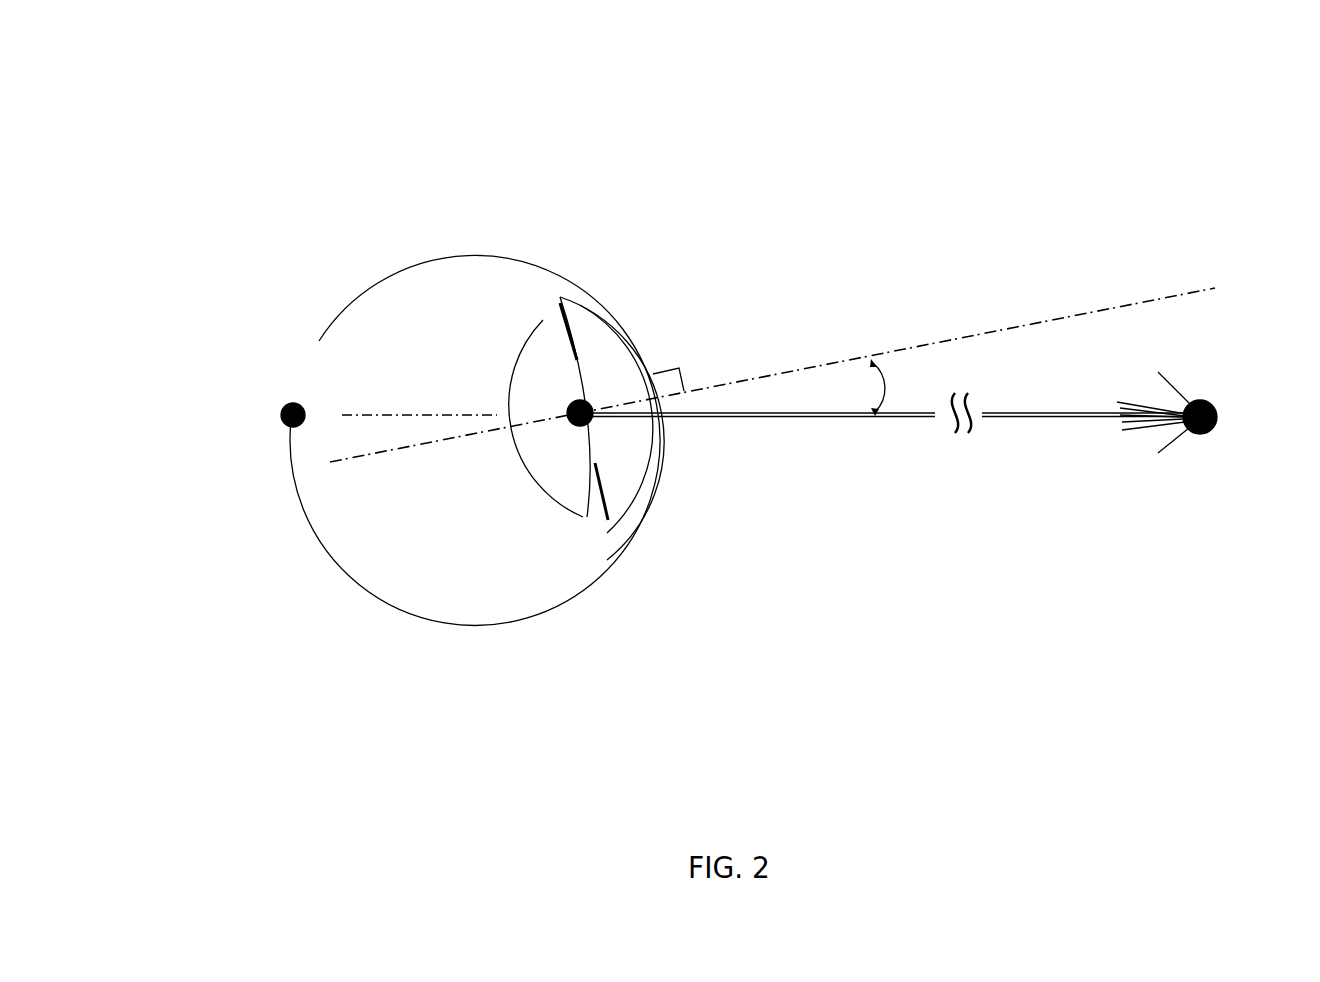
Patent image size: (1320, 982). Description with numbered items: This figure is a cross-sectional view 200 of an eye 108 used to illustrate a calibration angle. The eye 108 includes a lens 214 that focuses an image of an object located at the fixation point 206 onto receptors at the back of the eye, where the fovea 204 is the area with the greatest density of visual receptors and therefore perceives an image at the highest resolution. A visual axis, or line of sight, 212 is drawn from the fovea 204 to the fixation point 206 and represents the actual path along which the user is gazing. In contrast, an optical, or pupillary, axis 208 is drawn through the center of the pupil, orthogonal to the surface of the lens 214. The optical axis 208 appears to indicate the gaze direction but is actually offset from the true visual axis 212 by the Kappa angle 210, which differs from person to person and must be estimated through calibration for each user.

The cross-sectional view 200 is at (746, 56).
The eye 108 is at (401, 208).
The fovea 204 is at (281, 412).
The fixation point 206 is at (1217, 413).
The optical (pupillary) axis 208 is at (1087, 293).
The Kappa angle 210 is at (867, 405).
The visual axis (line of sight) 212 is at (1047, 478).
The lens 214 is at (560, 462).